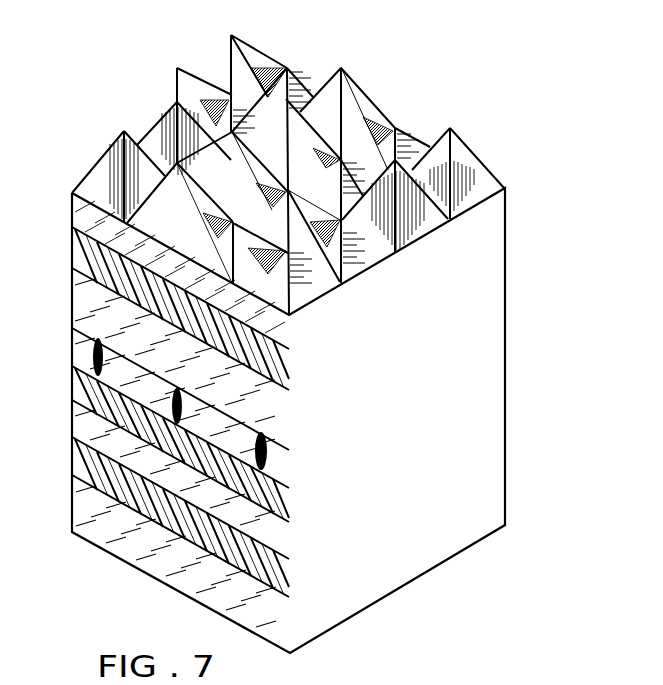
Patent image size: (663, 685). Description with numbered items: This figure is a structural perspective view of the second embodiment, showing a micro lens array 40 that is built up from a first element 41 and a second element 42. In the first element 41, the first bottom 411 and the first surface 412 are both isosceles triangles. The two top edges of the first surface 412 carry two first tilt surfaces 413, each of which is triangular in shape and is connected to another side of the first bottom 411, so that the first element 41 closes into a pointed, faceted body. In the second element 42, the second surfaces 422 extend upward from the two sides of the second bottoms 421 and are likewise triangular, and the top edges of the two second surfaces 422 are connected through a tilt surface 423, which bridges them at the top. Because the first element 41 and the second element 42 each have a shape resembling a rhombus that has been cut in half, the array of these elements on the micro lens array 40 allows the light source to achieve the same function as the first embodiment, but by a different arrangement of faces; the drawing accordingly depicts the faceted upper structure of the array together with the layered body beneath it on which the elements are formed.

The micro lens array 40 is at (468, 94).
The first element 41 is at (393, 115).
The second element 42 is at (478, 150).
The first bottom 411 is at (178, 243).
The first surface 412 is at (326, 85).
The first tilt surfaces 413 is at (371, 110).
The second bottoms 421 is at (282, 283).
The second surfaces 422 is at (283, 343).
The tilt surface 423 is at (328, 252).